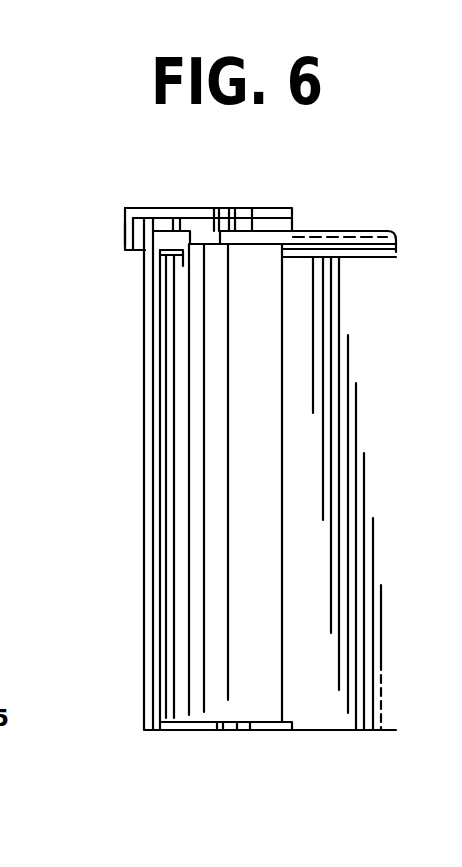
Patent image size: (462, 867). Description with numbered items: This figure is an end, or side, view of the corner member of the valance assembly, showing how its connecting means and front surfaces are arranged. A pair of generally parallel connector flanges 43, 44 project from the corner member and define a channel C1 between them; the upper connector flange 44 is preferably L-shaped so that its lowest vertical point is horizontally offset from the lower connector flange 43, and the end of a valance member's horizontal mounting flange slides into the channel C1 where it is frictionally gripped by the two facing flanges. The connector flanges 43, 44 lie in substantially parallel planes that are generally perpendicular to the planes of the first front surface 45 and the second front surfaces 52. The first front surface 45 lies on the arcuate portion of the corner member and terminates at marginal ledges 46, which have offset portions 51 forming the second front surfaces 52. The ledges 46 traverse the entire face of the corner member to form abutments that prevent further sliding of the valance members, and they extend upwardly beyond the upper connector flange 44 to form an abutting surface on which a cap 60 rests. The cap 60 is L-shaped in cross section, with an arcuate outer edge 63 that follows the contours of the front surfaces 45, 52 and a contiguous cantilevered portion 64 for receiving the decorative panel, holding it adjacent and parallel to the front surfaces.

The lower connector flange 43 is at (393, 257).
The upper connector flange 44 is at (210, 236).
The first front surface 45 is at (143, 375).
The marginal ledges 46 is at (158, 246).
The offset portions 51 is at (152, 573).
The second front surfaces 52 is at (152, 503).
The cap 60 is at (165, 207).
The arcuate outer edge 63 is at (124, 208).
The cantilevered portion 64 is at (125, 230).
The channel C1 is at (396, 251).